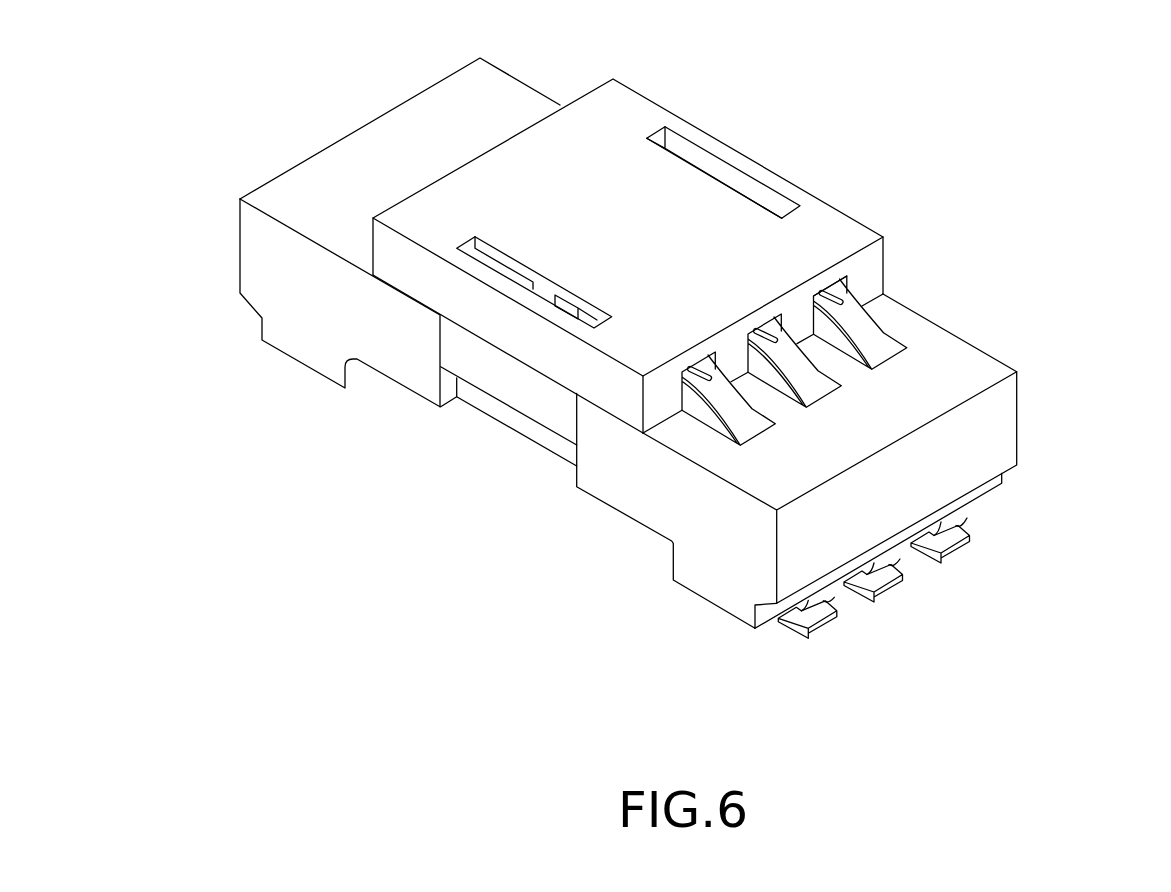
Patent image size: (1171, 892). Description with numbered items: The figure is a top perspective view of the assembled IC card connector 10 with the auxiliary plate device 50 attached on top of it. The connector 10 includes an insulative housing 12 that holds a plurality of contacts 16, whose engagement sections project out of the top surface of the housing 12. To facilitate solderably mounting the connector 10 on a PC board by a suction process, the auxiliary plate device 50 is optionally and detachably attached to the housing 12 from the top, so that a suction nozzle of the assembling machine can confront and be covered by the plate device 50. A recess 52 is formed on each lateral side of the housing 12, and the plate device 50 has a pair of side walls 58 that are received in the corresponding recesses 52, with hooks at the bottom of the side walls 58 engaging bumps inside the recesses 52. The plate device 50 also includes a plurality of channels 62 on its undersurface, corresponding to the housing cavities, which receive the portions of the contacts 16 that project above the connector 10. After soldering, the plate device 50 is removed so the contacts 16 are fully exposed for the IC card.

The IC card connector 10 is at (695, 602).
The insulative housing 12 is at (1002, 430).
The contacts 16 is at (867, 328).
The auxiliary plate device 50 is at (727, 131).
The recess 52 is at (532, 436).
The side walls 58 is at (488, 373).
The channels 62 is at (847, 278).